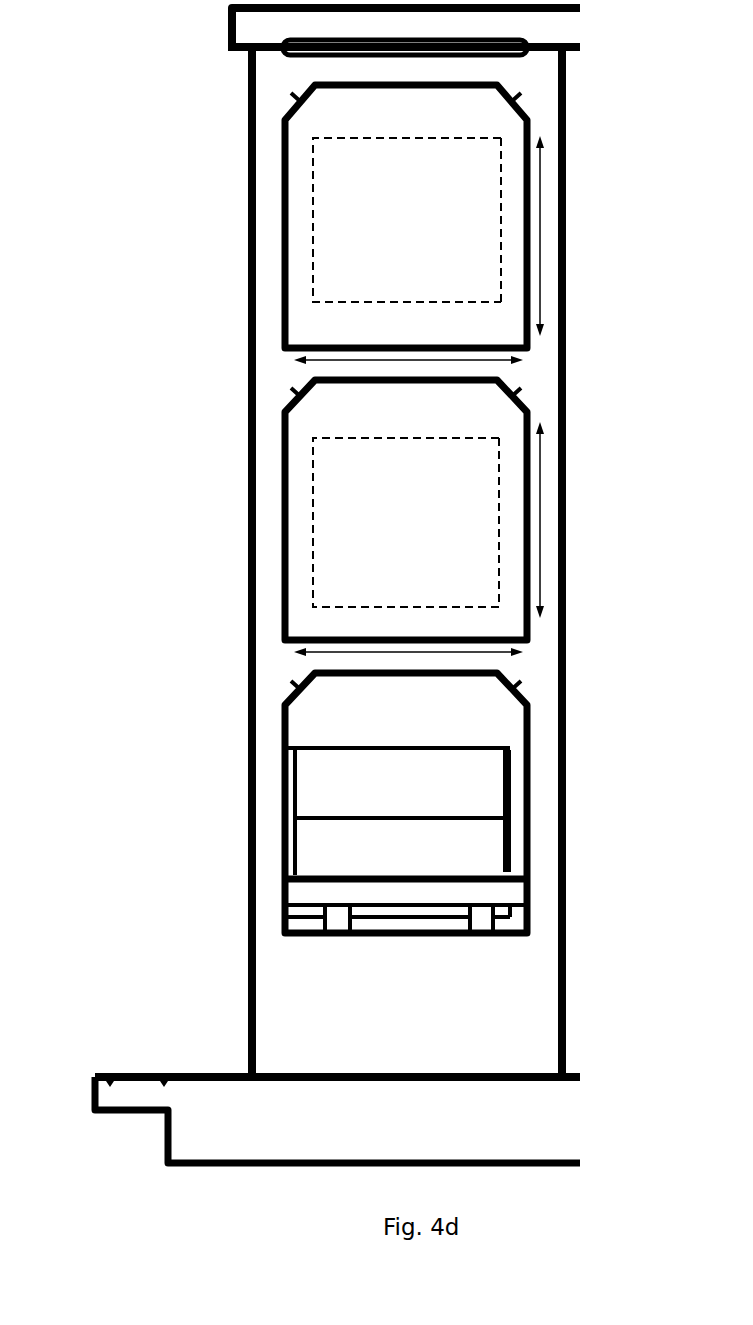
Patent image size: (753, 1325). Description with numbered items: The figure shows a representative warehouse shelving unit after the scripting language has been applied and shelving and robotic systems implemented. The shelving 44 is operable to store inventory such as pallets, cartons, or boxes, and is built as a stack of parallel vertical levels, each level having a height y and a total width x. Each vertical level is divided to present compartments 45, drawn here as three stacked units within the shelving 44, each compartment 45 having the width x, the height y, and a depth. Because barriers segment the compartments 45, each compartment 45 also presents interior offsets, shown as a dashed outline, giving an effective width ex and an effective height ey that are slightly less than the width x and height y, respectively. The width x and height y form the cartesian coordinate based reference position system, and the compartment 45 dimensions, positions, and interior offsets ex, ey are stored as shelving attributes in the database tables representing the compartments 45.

The shelving 44 is at (243, 92).
The compartment 45 is at (284, 290).
The effective width ex is at (407, 386).
The effective height ey is at (490, 386).
The width x is at (407, 513).
The height y is at (538, 396).